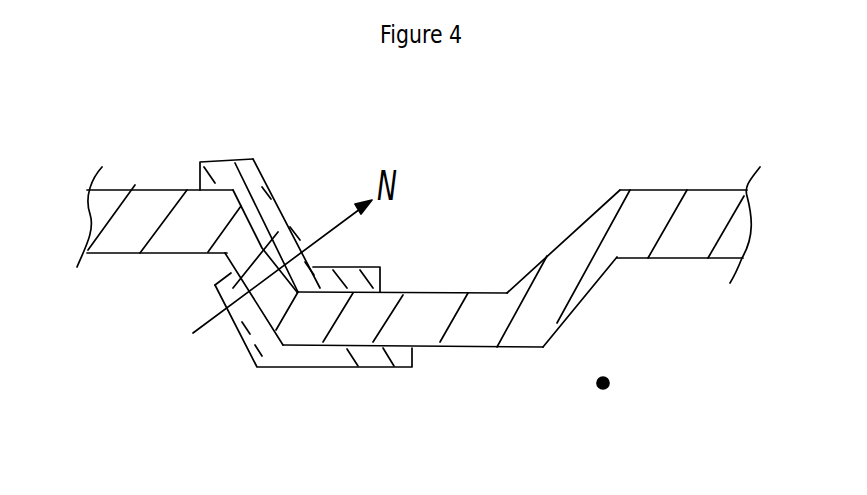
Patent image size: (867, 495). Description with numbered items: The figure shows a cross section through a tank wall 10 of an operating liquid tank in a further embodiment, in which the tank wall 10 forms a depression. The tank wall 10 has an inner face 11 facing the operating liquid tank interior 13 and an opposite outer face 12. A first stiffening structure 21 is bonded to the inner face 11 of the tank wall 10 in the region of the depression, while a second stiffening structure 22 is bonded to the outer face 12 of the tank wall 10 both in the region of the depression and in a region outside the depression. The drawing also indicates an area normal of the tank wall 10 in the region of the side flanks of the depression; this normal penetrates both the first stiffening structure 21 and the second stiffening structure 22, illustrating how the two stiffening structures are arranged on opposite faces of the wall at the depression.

The tank wall 10 is at (652, 212).
The inner face 11 is at (513, 352).
The outer face 12 is at (478, 292).
The operating liquid tank interior 13 is at (607, 392).
The first stiffening structure 21 is at (330, 356).
The second stiffening structure 22 is at (258, 180).